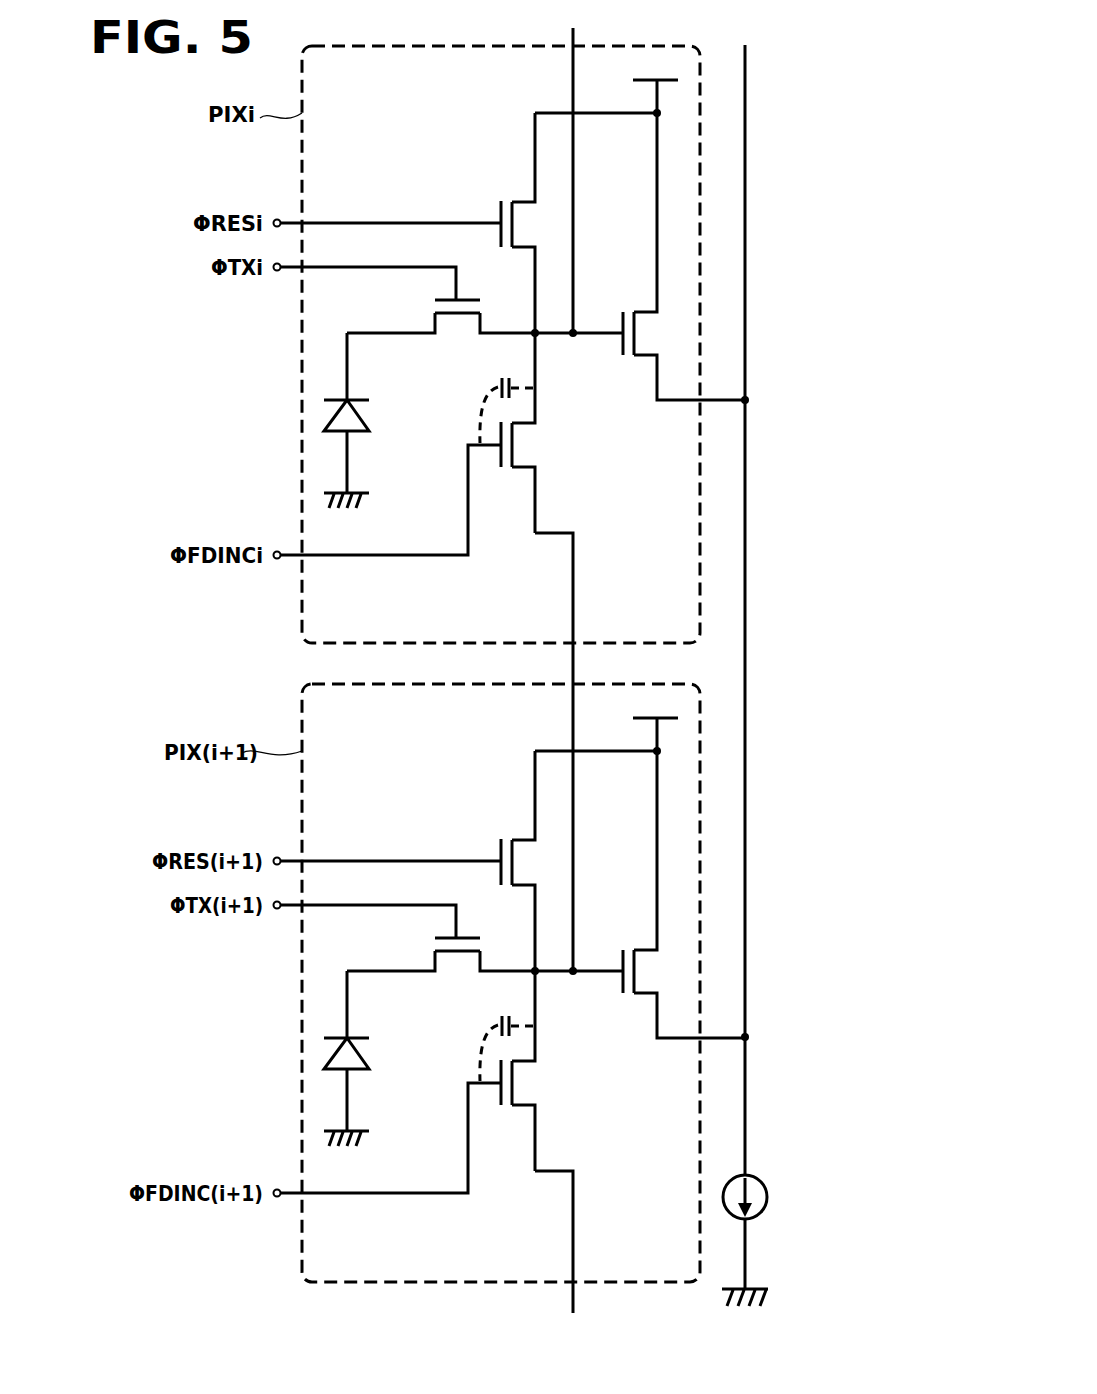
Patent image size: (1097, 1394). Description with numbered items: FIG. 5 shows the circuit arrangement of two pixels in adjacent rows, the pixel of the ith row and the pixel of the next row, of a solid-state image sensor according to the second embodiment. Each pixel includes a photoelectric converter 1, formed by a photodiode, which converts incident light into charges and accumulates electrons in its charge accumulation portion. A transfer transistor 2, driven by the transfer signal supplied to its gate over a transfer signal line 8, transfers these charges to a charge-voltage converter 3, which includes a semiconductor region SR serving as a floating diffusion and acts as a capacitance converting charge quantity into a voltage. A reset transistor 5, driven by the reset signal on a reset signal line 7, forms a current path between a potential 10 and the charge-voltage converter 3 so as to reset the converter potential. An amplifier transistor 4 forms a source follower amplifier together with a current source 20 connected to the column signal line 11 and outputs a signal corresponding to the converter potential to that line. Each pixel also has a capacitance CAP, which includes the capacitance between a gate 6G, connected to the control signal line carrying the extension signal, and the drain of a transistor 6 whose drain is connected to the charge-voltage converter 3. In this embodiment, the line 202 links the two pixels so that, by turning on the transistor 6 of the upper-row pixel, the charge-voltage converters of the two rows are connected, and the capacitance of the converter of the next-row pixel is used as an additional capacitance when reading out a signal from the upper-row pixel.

The photoelectric converter 1 is at (368, 417).
The transfer transistor 2 is at (428, 312).
The charge-voltage converter 3 is at (578, 395).
The amplifier transistor 4 is at (627, 306).
The reset transistor 5 is at (501, 861).
The transistor 6 is at (535, 445).
The gate 6G is at (495, 456).
The reset signal line 7 is at (401, 221).
The transfer signal line 8 is at (340, 270).
The potential 10 is at (640, 73).
The column signal line 11 is at (746, 548).
The current source 20 is at (768, 1197).
The connection line between pixels 202 is at (571, 63).
The capacitance CAP is at (498, 381).
The semiconductor region SR is at (553, 337).